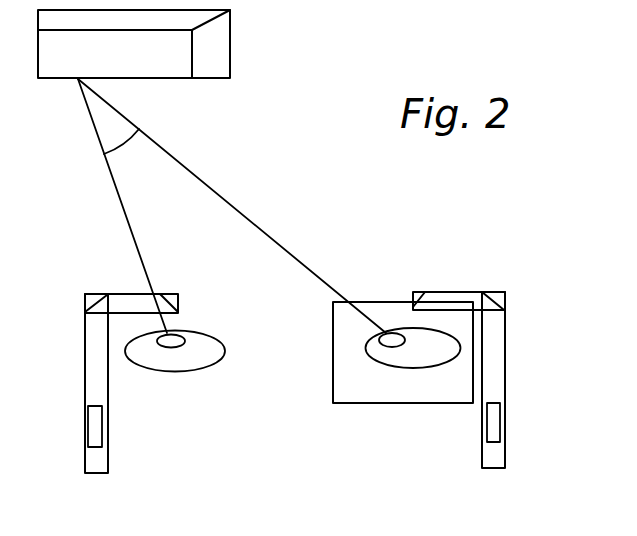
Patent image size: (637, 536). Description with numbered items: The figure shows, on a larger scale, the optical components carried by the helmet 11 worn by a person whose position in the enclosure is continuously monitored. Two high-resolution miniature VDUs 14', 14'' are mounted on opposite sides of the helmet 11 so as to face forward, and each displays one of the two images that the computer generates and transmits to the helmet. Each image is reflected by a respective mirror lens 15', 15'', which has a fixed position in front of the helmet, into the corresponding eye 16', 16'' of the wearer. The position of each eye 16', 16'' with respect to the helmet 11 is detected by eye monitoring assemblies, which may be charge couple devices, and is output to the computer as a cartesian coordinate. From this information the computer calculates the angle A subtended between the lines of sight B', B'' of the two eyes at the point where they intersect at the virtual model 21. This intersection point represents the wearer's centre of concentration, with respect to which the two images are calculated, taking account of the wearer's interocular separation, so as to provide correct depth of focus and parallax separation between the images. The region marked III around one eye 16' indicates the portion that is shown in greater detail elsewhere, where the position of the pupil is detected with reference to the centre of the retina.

The virtual model 21 is at (230, 52).
The mirror lens 15' is at (459, 343).
The mirror lens 15'' is at (120, 358).
The eye 16' is at (413, 390).
The eye 16'' is at (175, 384).
The miniature VDU 14' is at (52, 427).
The miniature VDU 14'' is at (535, 432).
The helmet 11 is at (368, 500).
The FIG. 3 detail region III is at (350, 393).
The angle A is at (124, 155).
The line of sight B' is at (232, 206).
The line of sight B'' is at (88, 206).